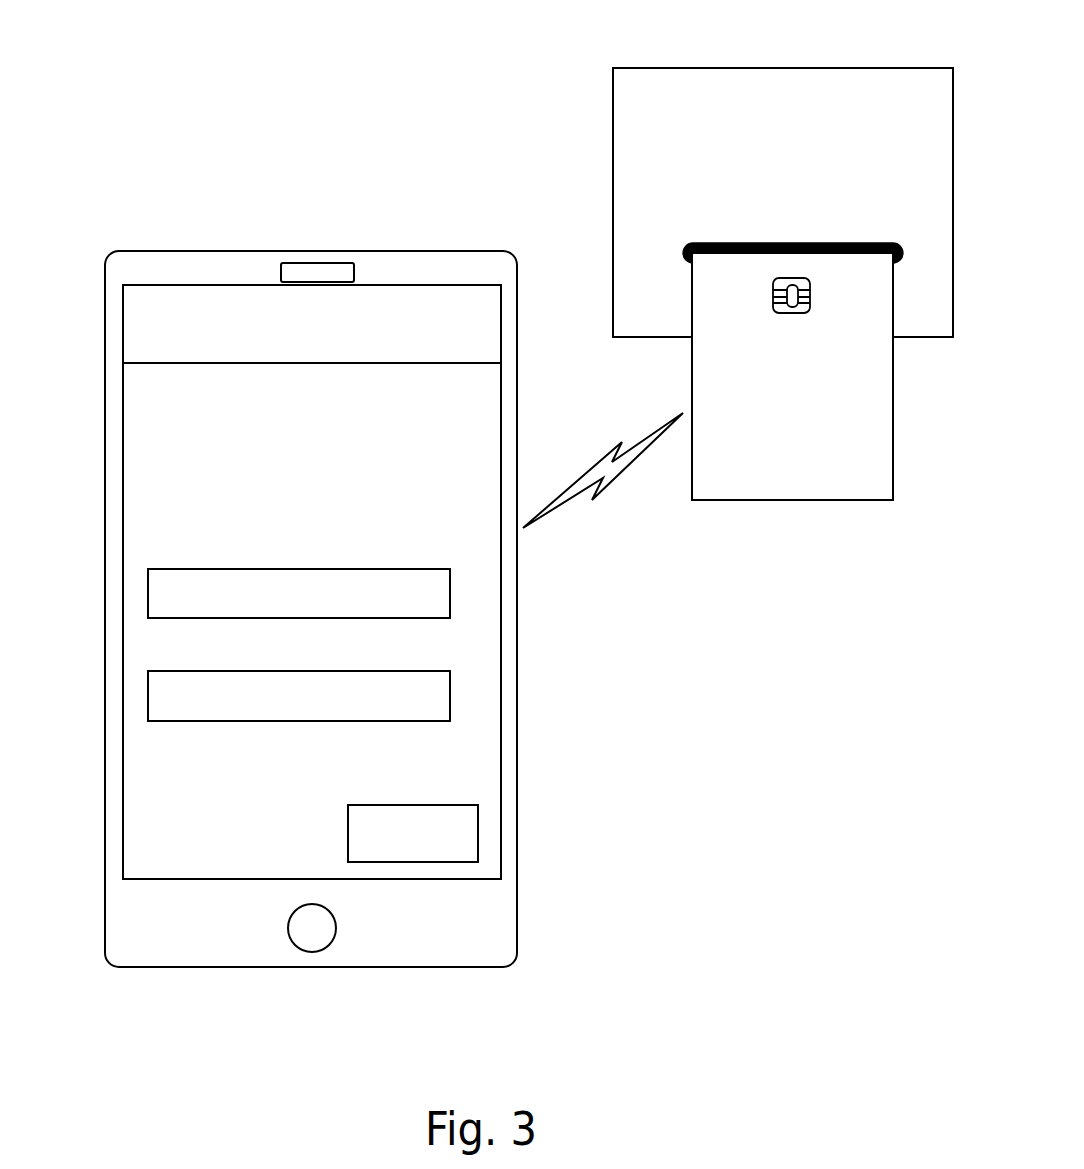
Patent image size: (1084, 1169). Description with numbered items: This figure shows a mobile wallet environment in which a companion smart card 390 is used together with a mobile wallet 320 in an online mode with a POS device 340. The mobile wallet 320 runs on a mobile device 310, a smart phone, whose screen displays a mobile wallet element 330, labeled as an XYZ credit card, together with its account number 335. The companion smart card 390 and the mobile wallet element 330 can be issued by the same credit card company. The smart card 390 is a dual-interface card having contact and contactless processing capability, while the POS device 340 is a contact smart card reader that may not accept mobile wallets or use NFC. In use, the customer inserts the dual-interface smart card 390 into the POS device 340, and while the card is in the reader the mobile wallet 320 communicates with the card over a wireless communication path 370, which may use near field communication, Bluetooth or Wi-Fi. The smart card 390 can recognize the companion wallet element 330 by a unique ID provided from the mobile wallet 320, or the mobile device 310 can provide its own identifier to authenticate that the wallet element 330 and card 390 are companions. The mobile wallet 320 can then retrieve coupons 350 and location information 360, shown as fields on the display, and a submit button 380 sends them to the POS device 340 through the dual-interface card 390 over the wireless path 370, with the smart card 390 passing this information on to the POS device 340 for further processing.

The mobile device 310 is at (205, 263).
The mobile wallet 320 is at (447, 299).
The mobile wallet element 330 is at (137, 402).
The account number 335 is at (137, 452).
The POS device 340 is at (797, 77).
The coupons 350 is at (367, 583).
The location information 360 is at (367, 688).
The wireless communication path 370 is at (575, 492).
The submit button 380 is at (465, 832).
The companion smart card 390 is at (789, 482).